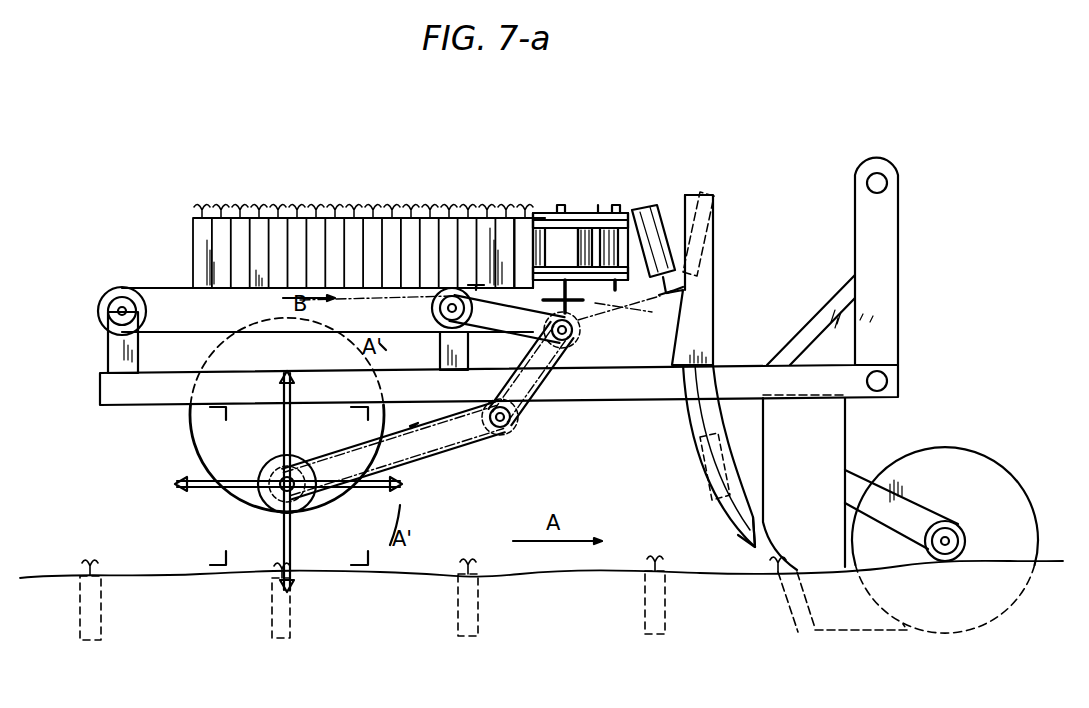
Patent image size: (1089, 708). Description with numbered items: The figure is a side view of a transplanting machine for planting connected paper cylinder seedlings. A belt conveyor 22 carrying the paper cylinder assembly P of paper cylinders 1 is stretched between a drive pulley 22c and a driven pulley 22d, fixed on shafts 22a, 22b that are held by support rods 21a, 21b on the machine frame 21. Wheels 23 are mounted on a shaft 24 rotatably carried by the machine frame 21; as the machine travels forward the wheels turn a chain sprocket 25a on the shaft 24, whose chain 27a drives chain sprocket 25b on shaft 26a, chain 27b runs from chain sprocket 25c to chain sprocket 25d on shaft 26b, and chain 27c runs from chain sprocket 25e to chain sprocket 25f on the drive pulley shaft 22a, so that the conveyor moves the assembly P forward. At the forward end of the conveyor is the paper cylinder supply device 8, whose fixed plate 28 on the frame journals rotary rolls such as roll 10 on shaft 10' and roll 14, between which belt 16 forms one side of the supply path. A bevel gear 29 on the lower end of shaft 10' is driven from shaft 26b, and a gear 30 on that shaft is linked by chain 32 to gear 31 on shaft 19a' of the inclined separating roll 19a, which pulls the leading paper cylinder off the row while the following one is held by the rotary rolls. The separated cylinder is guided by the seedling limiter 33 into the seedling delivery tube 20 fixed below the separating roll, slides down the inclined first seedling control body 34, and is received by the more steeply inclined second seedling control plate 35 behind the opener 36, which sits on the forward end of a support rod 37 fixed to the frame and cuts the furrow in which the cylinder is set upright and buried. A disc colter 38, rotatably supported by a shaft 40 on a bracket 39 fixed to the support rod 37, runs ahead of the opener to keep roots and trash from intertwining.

The paper cylinder 1 is at (354, 217).
The paper cylinder assembly P is at (288, 205).
The paper cylinder supply device 8 is at (594, 202).
The rotary roll 10 is at (510, 233).
The shaft of rotary roll 10 10' is at (543, 185).
The rotary roll 14 is at (617, 212).
The belt 16 is at (566, 258).
The separating roll 19a is at (666, 234).
The shaft of separating roll 19a 19a' is at (674, 216).
The seedling delivery tube 20 is at (690, 415).
The machine frame 21 is at (130, 399).
The support rod 21a is at (440, 350).
The support rod 21b is at (112, 352).
The belt conveyor 22 is at (180, 290).
The drive pulley shaft 22a is at (440, 312).
The driven pulley shaft 22b is at (122, 305).
The drive pulley 22c is at (432, 304).
The driven pulley 22d is at (98, 311).
The wheel 23 is at (192, 516).
The shaft 24 is at (293, 498).
The chain sprocket 25a is at (272, 496).
The chain sprocket 25b is at (524, 414).
The chain sprocket 25c is at (490, 430).
The chain sprocket 25d is at (600, 338).
The chain sprocket 25e is at (572, 342).
The chain sprocket 25f is at (390, 300).
The shaft 26a is at (504, 436).
The shaft 26b is at (545, 330).
The chain 27a is at (455, 470).
The chain 27b is at (548, 372).
The chain 27c is at (482, 336).
The fixed plate 28 is at (478, 287).
The bevel gear 29 is at (572, 312).
The gear 30 is at (584, 300).
The gear 31 is at (668, 296).
The chain 32 is at (630, 323).
The seedling limiter 33 is at (714, 262).
The first seedling control body 34 is at (735, 535).
The second seedling control plate 35 is at (770, 568).
The opener 36 is at (850, 630).
The support rod 37 is at (840, 436).
The disc colter 38 is at (1000, 486).
The bracket 39 is at (882, 500).
The shaft 40 is at (958, 532).